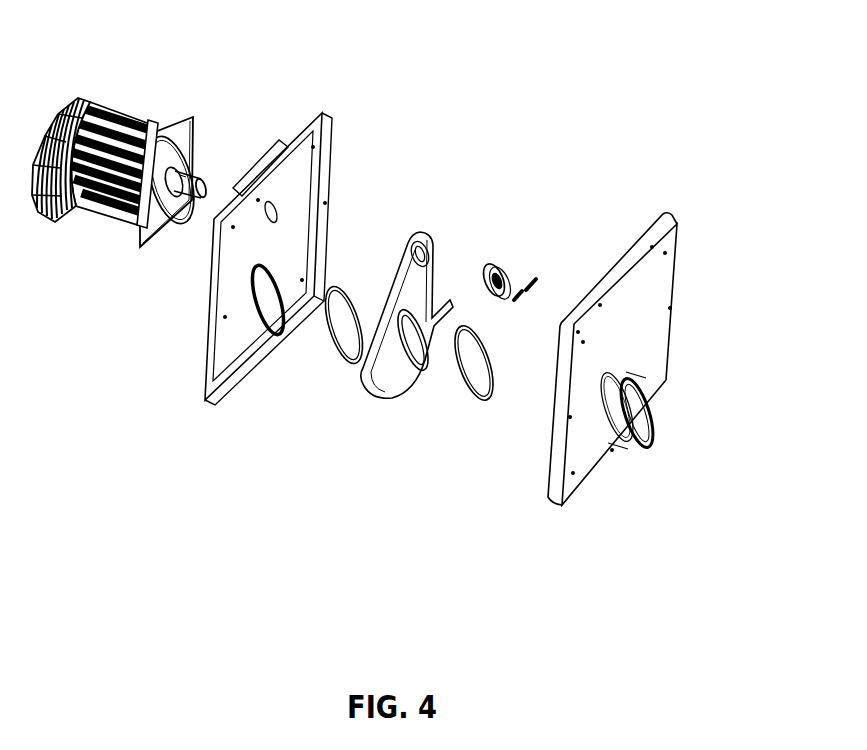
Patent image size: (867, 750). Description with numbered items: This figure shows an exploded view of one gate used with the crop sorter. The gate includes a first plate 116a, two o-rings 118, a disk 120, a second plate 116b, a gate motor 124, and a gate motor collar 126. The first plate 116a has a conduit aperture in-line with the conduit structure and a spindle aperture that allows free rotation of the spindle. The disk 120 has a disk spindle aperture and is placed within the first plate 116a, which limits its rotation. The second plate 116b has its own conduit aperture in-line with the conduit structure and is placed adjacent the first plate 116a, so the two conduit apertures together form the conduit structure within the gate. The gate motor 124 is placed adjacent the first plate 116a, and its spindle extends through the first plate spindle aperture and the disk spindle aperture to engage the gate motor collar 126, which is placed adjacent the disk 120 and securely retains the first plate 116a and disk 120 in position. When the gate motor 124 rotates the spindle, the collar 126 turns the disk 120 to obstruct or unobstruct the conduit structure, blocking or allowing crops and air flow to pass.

The gate motor 124 is at (143, 108).
The first plate 116a is at (322, 111).
The second plate 116b is at (675, 216).
The o-rings 118 is at (325, 363).
The disk 120 is at (421, 238).
The gate motor collar 126 is at (490, 270).